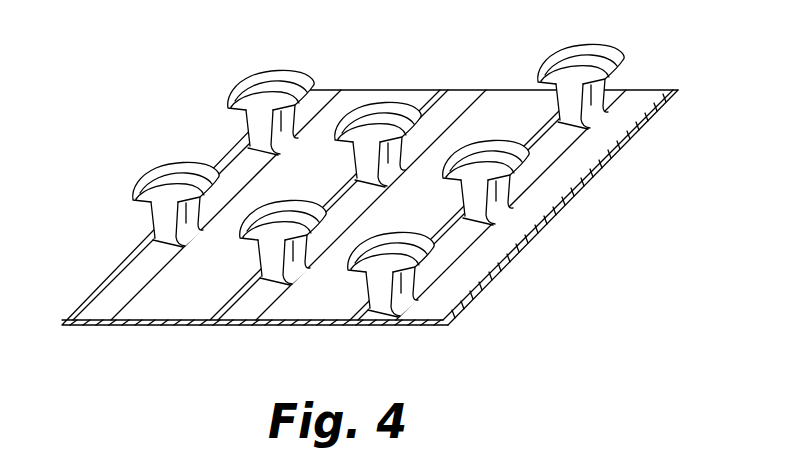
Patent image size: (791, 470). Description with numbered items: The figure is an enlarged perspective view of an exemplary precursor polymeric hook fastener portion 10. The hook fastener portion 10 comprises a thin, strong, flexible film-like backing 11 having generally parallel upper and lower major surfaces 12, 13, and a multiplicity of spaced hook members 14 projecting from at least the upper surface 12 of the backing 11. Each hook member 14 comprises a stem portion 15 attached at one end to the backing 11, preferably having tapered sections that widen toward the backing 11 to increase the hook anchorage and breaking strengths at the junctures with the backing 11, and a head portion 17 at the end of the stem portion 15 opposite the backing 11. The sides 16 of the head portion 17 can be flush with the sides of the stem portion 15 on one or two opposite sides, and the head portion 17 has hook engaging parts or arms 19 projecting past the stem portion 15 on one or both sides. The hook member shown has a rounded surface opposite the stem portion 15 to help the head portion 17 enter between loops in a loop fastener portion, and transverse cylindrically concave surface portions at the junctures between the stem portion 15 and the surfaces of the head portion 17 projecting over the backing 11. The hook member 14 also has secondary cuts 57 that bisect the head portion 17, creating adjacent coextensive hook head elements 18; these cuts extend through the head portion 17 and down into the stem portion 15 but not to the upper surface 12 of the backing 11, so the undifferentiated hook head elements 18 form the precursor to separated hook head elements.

The precursor polymeric hook fastener portion 10 is at (384, 194).
The backing 11 is at (615, 155).
The upper surface 12 is at (163, 305).
The lower surface 13 is at (180, 326).
The hook members 14 is at (378, 107).
The stem portion 15 is at (493, 202).
The sides of the head portion 16 is at (588, 100).
The head portion 17 is at (622, 83).
The hook head elements 18 is at (140, 182).
The hook engaging parts or arms 19 is at (462, 292).
The secondary cuts 57 is at (173, 176).